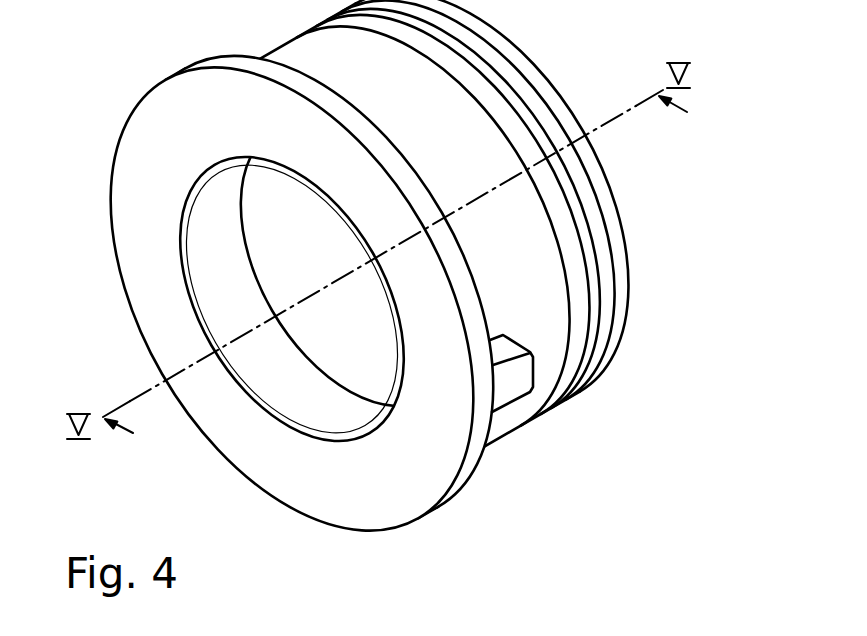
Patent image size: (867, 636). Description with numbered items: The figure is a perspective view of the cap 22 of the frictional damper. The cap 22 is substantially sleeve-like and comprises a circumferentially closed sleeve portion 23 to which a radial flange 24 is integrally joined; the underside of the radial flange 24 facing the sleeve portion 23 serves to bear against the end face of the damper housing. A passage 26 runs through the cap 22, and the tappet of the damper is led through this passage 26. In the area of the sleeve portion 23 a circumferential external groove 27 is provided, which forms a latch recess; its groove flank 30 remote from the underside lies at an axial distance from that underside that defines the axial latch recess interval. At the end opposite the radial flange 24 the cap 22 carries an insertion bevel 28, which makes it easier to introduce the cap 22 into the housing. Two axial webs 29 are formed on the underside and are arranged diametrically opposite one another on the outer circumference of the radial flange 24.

The cap 22 is at (683, 137).
The sleeve portion 23 is at (547, 290).
The radial flange 24 is at (142, 137).
The passage 26 is at (223, 298).
The external groove 27 is at (547, 182).
The insertion bevel 28 is at (622, 230).
The axial webs 29 is at (510, 385).
The groove flank 30 is at (597, 305).